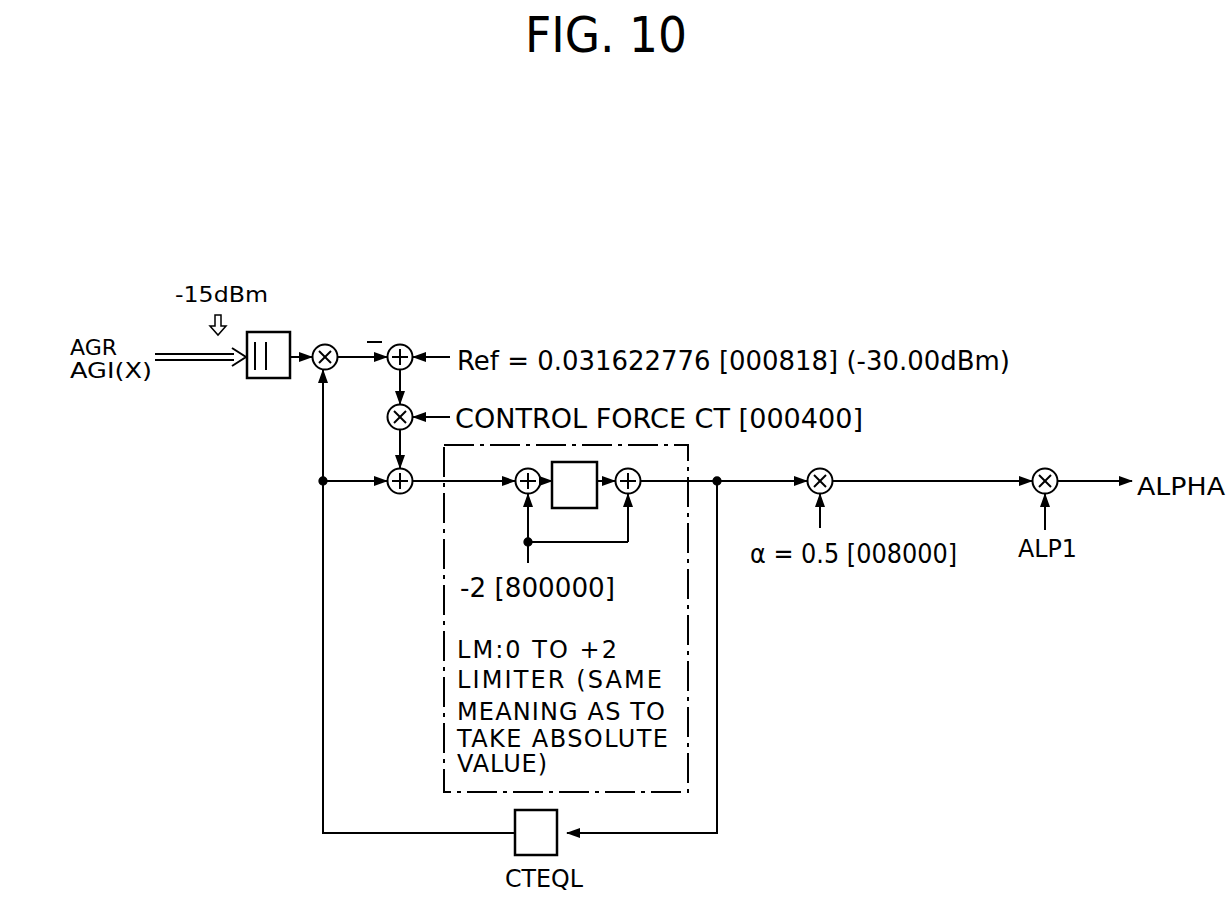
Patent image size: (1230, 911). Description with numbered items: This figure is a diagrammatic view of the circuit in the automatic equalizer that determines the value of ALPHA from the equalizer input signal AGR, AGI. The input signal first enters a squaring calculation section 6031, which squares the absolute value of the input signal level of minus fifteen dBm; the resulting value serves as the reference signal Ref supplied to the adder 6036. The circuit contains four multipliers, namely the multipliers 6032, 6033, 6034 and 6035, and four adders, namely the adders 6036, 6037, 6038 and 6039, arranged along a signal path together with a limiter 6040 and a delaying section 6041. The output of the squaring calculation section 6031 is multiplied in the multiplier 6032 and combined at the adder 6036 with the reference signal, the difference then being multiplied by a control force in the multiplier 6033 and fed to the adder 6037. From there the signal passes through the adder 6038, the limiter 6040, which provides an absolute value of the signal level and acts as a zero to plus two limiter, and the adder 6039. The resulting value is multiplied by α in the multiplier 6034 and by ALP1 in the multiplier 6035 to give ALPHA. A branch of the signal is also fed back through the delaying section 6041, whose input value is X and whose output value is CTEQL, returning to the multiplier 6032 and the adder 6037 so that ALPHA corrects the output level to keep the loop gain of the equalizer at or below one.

The squaring calculation section 6031 is at (292, 332).
The multiplier 6032 is at (317, 370).
The multiplier 6033 is at (391, 427).
The multiplier 6034 is at (832, 475).
The multiplier 6035 is at (1048, 470).
The adder 6036 is at (412, 347).
The adder 6037 is at (392, 493).
The adder 6038 is at (521, 492).
The adder 6039 is at (640, 473).
The limiter 6040 is at (580, 508).
The delaying section 6041 is at (515, 838).